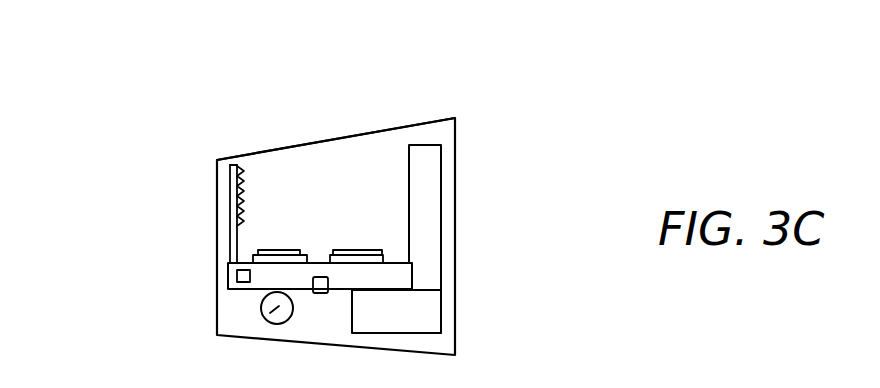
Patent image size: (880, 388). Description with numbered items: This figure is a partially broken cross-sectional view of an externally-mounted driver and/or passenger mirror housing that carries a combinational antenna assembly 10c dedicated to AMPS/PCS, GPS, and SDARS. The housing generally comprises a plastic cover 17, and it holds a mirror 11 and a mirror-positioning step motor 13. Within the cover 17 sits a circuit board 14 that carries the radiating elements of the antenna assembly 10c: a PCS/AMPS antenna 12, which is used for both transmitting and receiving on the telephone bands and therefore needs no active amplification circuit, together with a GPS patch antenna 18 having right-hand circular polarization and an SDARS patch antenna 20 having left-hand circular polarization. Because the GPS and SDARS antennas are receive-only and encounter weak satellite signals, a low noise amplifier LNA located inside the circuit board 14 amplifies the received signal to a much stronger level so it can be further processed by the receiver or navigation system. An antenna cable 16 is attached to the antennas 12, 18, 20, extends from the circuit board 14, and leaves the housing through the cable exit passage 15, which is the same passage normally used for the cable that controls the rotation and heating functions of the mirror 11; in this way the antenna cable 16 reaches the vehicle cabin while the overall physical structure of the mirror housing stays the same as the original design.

The antenna assembly 10c is at (342, 188).
The plastic cover 17 is at (313, 143).
The PCS/AMPS antenna 12 is at (263, 191).
The mirror 11 is at (427, 172).
The mirror-positioning step motor 13 is at (430, 312).
The circuit board 14 is at (393, 272).
The low noise amplifier LNA is at (228, 274).
The GPS patch antenna 18 is at (221, 240).
The SDARS patch antenna 20 is at (425, 234).
The antenna cable 16 is at (320, 293).
The cable exit passage 15 is at (261, 314).